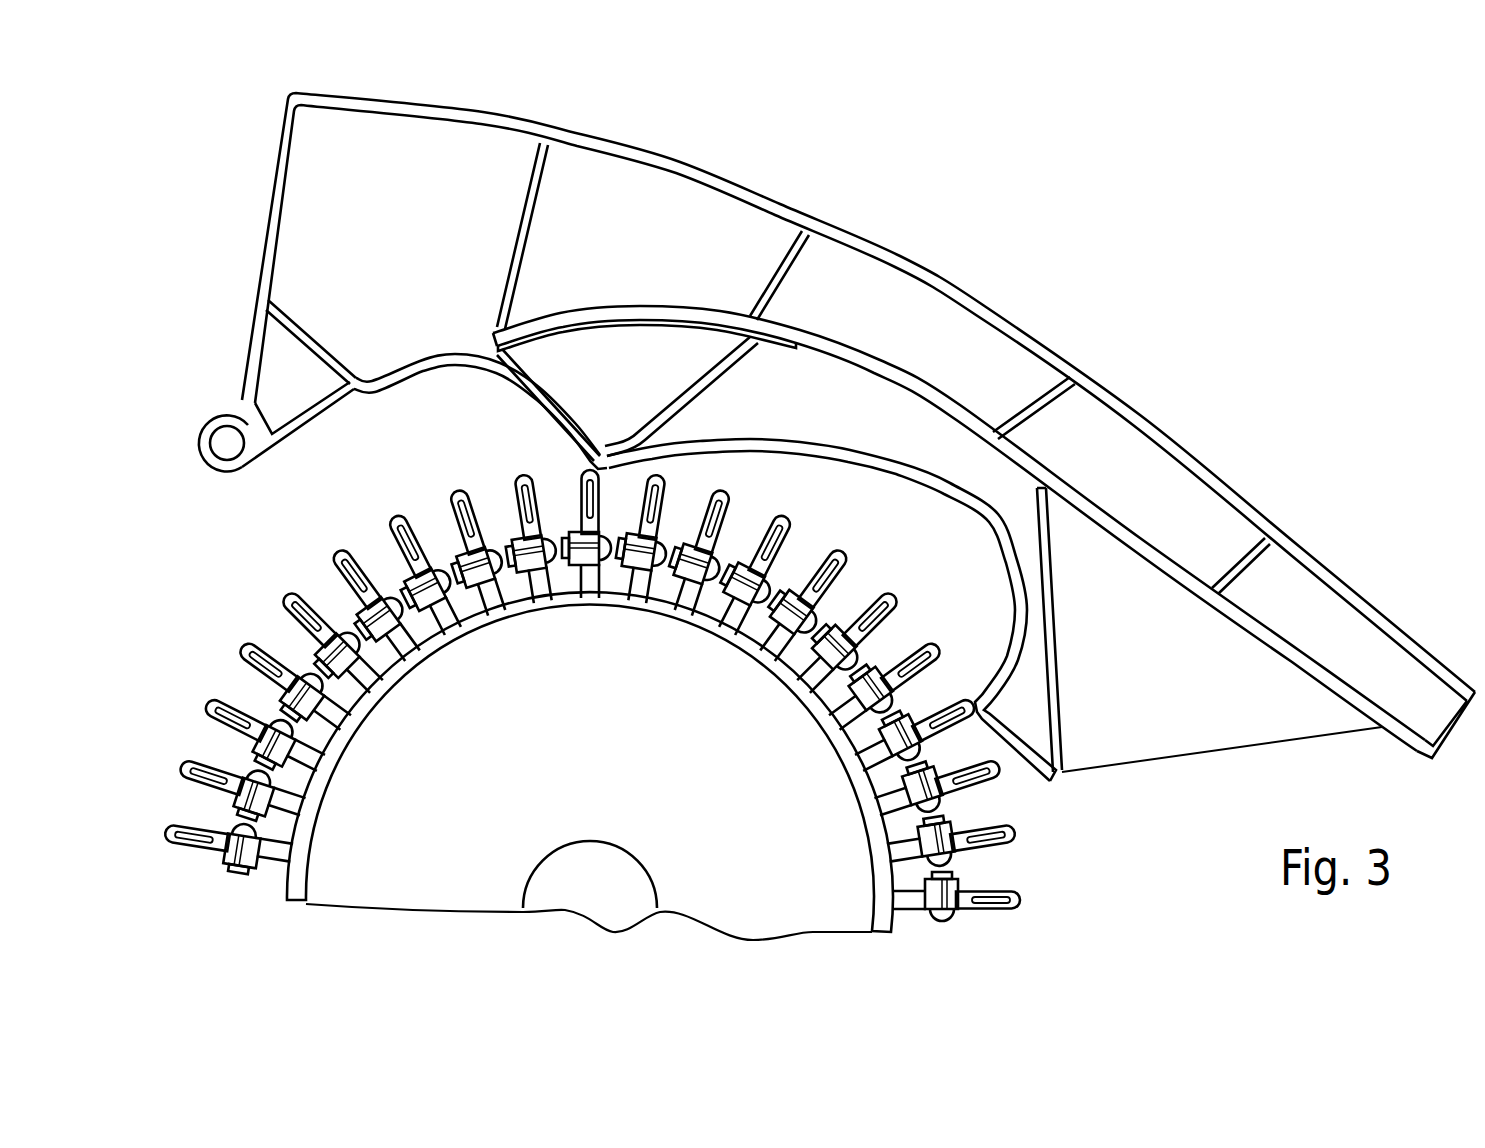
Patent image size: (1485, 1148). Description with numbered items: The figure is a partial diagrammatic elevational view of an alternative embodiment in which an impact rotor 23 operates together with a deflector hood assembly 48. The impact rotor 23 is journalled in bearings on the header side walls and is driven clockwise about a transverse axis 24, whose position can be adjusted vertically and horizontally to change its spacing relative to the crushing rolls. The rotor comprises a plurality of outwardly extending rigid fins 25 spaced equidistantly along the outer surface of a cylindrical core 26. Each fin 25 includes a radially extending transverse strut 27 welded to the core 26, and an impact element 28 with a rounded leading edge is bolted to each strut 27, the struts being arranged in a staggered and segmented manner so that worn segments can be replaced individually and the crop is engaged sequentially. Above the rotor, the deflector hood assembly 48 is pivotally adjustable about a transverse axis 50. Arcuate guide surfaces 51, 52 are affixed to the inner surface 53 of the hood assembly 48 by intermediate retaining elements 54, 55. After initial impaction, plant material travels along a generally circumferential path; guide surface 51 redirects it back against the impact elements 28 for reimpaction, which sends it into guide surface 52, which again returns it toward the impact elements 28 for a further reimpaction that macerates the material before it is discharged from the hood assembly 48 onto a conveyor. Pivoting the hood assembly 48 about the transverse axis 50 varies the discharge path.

The impact rotor 23 is at (710, 696).
The transverse axis 24 is at (570, 860).
The rigid fins 25 is at (443, 490).
The cylindrical core 26 is at (737, 645).
The transverse strut 27 is at (840, 630).
The impact element 28 is at (820, 555).
The deflector hood assembly 48 is at (823, 437).
The transverse axis 50 is at (228, 440).
The arcuate guide surface 51 is at (440, 358).
The arcuate guide surface 52 is at (868, 488).
The inner surface 53 is at (850, 368).
The intermediate retaining element 54 is at (676, 388).
The intermediate retaining element 55 is at (1062, 625).